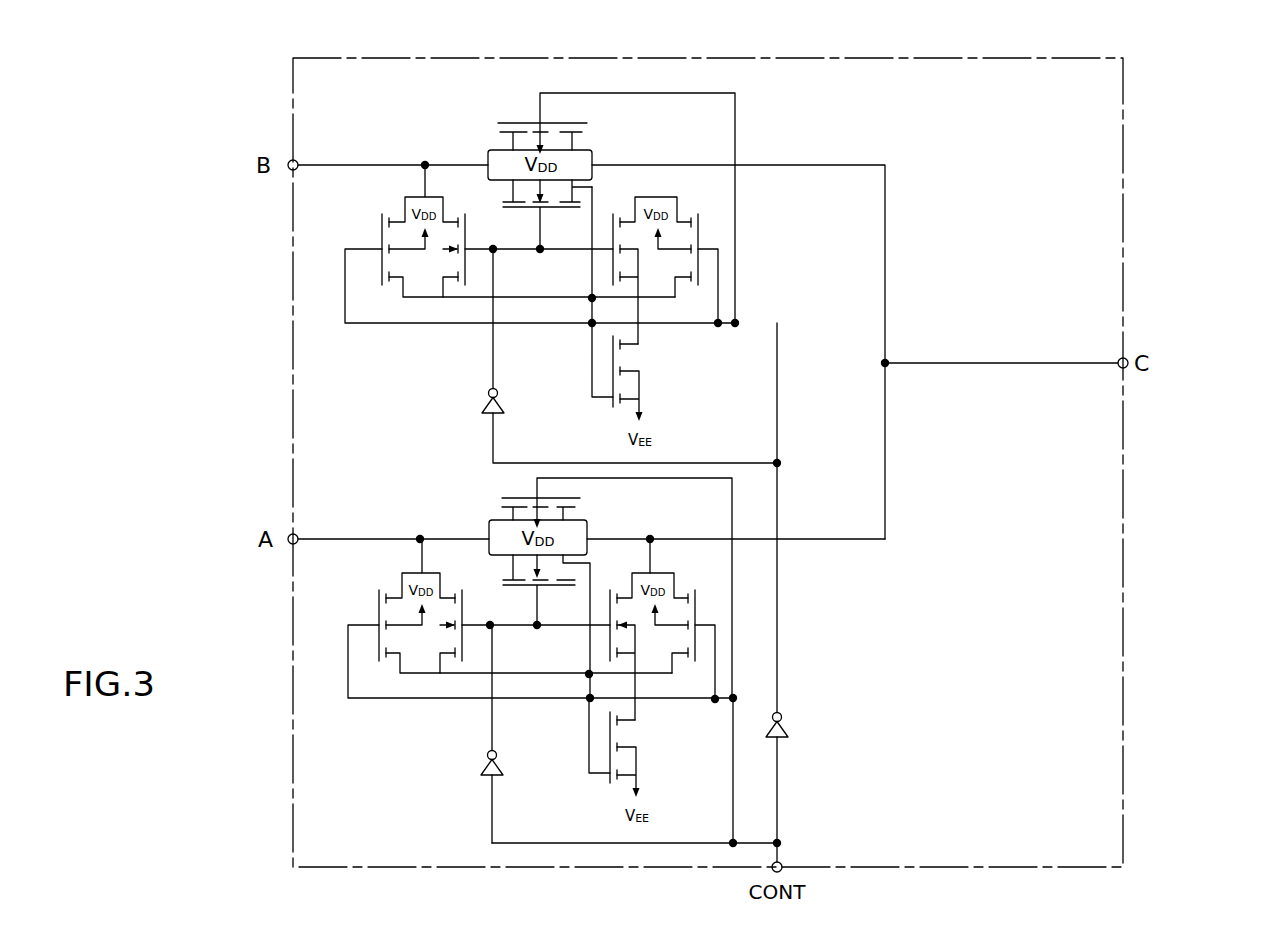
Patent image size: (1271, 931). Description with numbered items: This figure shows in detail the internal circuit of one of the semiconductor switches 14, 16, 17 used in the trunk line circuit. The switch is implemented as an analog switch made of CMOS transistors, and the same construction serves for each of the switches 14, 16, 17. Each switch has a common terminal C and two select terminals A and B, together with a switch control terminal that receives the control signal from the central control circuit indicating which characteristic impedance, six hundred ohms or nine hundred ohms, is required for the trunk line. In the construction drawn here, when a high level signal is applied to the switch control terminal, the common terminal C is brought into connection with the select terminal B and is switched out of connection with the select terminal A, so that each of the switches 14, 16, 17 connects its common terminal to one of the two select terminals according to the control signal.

The switch 14 is at (761, 457).
The switch 16 is at (761, 457).
The logic gate circuit 17 is at (1124, 78).